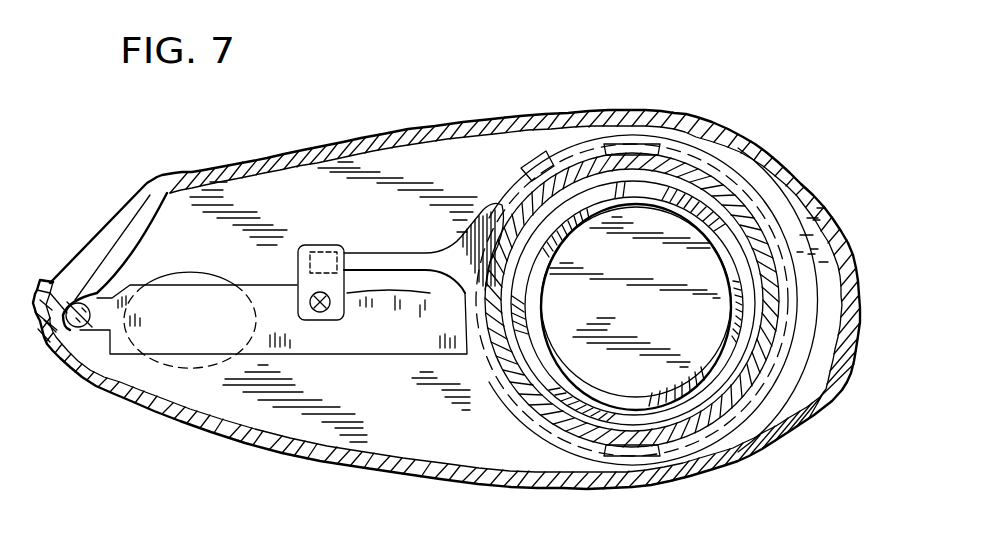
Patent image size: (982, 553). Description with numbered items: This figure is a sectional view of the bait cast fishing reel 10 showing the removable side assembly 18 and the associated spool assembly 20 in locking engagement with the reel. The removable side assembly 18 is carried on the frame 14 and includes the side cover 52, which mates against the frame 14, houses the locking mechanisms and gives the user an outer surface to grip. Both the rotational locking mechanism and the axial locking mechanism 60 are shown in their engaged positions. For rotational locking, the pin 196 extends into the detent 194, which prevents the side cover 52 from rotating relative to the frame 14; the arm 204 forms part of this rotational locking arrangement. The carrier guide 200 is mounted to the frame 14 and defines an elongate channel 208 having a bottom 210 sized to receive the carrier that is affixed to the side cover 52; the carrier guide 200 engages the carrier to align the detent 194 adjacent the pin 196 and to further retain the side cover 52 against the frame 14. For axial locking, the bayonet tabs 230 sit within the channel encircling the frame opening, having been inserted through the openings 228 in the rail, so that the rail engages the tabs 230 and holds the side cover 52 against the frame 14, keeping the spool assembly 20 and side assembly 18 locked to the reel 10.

The bait cast fishing reel 10 is at (139, 158).
The frame 14 is at (300, 209).
The removable side assembly 18 is at (352, 122).
The spool assembly 20 is at (690, 265).
The side cover 52 is at (432, 130).
The axial locking mechanism 60 is at (633, 138).
The detent 194 is at (50, 352).
The pin 196 is at (95, 285).
The carrier guide 200 is at (378, 230).
The arm 204 is at (140, 286).
The elongate channel 208 is at (319, 245).
The bottom 210 is at (404, 307).
The openings 228 is at (655, 140).
The bayonet tabs 230 is at (545, 155).